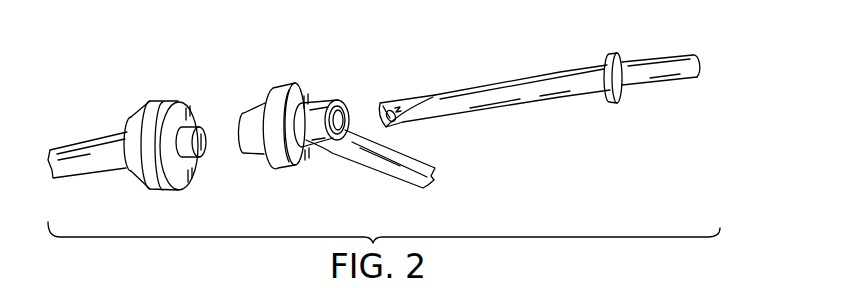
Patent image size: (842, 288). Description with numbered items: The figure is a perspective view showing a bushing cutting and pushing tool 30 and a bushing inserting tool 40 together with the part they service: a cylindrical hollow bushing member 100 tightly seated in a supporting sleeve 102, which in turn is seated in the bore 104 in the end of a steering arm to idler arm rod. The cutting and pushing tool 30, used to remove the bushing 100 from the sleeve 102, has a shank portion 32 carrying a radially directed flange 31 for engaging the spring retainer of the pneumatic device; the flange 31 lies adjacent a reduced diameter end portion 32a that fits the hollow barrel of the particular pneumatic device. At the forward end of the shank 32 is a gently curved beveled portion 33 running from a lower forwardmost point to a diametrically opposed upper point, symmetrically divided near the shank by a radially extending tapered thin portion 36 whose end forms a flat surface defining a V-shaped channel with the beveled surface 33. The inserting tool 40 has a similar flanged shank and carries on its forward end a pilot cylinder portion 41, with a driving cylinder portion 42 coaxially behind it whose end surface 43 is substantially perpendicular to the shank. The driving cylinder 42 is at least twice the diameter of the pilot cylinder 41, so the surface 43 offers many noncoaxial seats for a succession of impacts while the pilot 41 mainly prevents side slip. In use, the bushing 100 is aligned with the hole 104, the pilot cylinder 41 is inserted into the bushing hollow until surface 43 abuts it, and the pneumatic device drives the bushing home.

The bushing cutting and pushing tool 30 is at (678, 49).
The radially directed flange 31 is at (618, 100).
The shank portion 32 is at (573, 92).
The reduced diameter end portion 32a is at (685, 80).
The gently curved beveled portion 33 is at (407, 117).
The radially extending tapered thin portion 36 is at (398, 92).
The bushing inserting tool 40 is at (93, 119).
The pilot cylinder portion 41 is at (187, 132).
The driving cylinder portion 42 is at (175, 188).
The end surface 43 is at (195, 170).
The cylindrical hollow bushing member 100 is at (340, 118).
The supporting sleeve 102 is at (322, 100).
The bore 104 is at (340, 147).